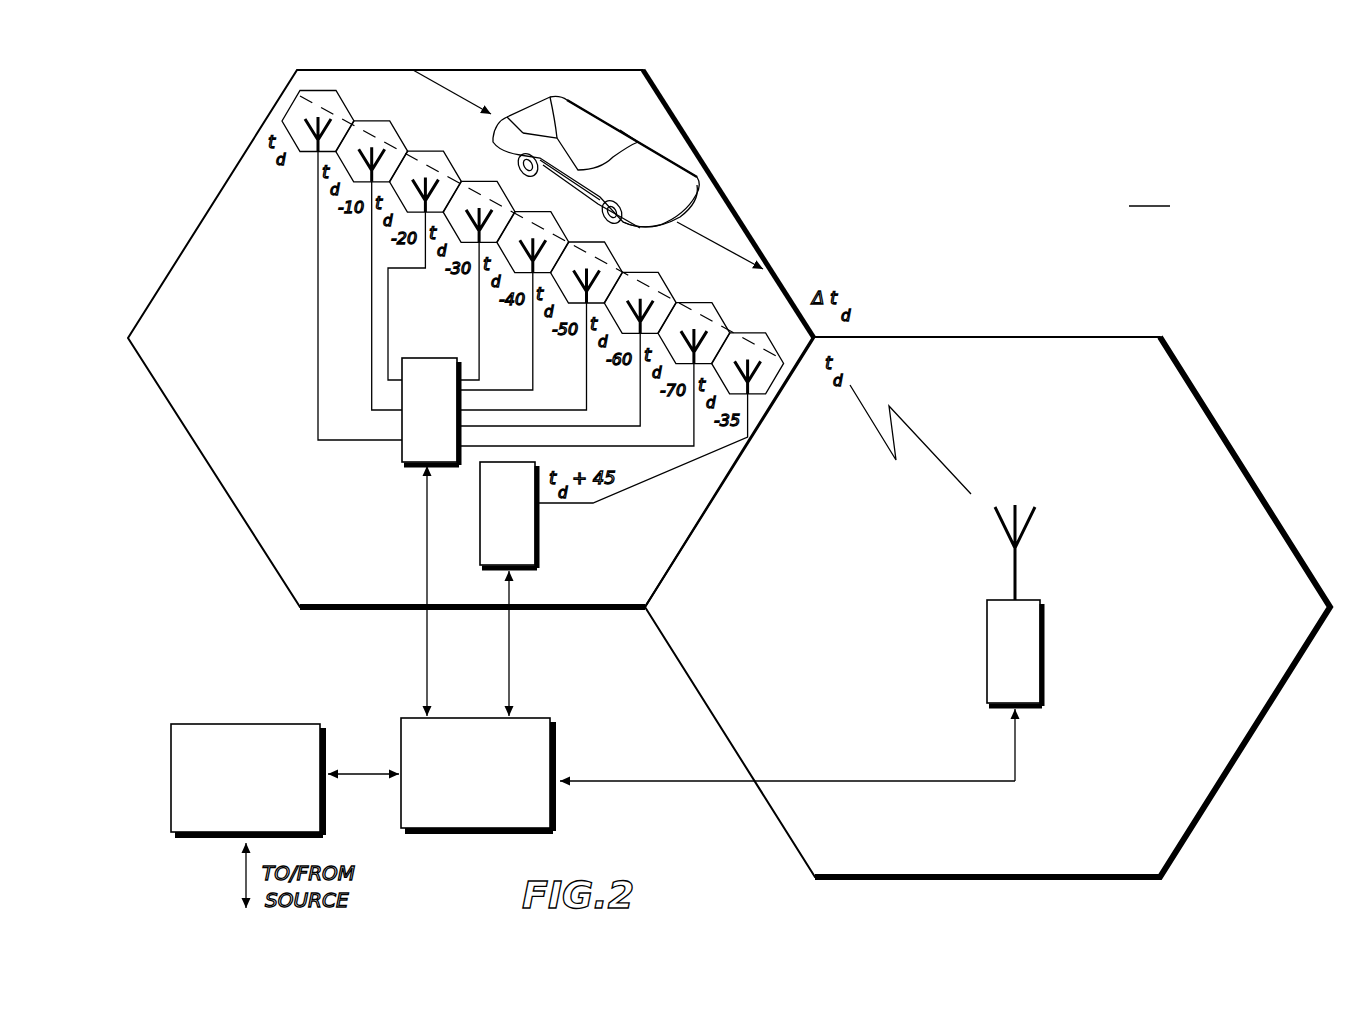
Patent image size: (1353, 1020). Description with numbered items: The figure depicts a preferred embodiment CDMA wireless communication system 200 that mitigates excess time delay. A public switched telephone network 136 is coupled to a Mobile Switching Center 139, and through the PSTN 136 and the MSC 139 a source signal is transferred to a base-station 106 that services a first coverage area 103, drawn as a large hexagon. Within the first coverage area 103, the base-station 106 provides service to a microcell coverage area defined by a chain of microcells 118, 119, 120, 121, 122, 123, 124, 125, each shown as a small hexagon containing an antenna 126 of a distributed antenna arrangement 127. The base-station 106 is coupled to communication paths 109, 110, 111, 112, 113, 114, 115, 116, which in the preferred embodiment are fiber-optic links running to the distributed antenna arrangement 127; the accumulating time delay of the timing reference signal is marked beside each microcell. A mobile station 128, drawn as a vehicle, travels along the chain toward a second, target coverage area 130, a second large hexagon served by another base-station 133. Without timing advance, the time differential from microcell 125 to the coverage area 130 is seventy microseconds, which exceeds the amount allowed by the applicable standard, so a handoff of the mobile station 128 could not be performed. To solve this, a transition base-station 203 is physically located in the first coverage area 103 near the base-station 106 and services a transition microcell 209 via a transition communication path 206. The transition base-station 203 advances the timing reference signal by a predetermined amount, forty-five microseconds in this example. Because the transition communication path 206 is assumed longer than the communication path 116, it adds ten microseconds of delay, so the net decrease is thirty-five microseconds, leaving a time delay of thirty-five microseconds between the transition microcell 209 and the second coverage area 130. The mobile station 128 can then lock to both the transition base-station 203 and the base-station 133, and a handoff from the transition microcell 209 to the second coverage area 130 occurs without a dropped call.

The wireless communication system 200 is at (1149, 195).
The first coverage area 103 is at (230, 175).
The second coverage area 130 is at (930, 335).
The base-station 106 is at (406, 464).
The communication path 109 is at (317, 307).
The communication path 110 is at (373, 247).
The communication path 111 is at (427, 265).
The communication path 112 is at (480, 335).
The communication path 113 is at (537, 343).
The communication path 114 is at (587, 382).
The communication path 115 is at (642, 403).
The communication path 116 is at (695, 417).
The microcell 118 is at (312, 155).
The microcell 119 is at (367, 120).
The microcell 120 is at (433, 150).
The microcell 121 is at (467, 182).
The microcell 122 is at (552, 212).
The microcell 123 is at (617, 245).
The microcell 124 is at (667, 273).
The microcell 125 is at (693, 300).
The transition microcell 209 is at (742, 333).
The antenna 126 is at (303, 127).
The distributed antenna arrangement 127 is at (308, 100).
The mobile station 128 is at (660, 157).
The base-station 133 is at (1047, 621).
The public switched telephone network 136 is at (311, 720).
The Mobile Switching Center 139 is at (559, 742).
The transition base-station 203 is at (540, 537).
The transition communication path 206 is at (680, 470).